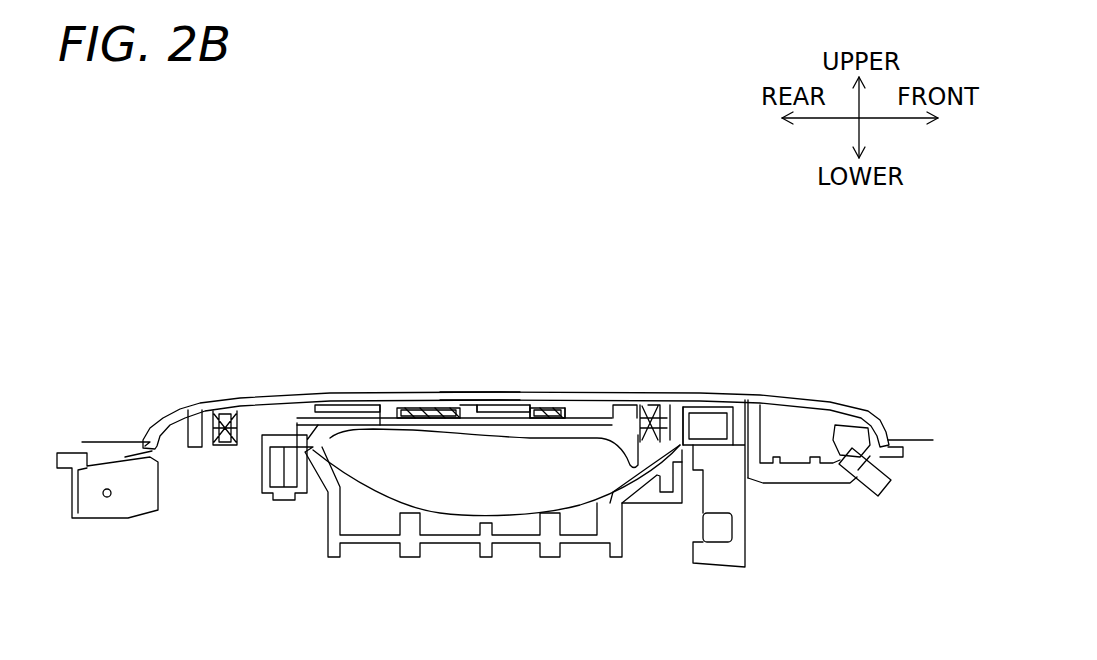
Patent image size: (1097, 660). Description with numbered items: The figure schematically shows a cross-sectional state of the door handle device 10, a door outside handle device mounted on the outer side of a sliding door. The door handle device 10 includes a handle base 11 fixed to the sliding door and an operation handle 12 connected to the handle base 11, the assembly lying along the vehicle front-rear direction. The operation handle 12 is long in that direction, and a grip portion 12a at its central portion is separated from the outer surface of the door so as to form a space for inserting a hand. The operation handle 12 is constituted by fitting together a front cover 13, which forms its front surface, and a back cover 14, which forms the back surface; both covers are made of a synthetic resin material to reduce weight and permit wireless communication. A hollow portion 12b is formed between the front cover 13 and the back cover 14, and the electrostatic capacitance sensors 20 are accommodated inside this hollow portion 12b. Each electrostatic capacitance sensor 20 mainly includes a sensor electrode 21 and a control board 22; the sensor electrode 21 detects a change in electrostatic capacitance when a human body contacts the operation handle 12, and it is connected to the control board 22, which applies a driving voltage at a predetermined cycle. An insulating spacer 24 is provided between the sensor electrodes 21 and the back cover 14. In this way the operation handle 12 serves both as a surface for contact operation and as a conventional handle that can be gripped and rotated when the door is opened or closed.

The door handle device 10 is at (812, 335).
The handle base 11 is at (330, 542).
The operation handle 12 is at (284, 386).
The grip portion 12a is at (478, 400).
The hollow portion 12b is at (640, 394).
The front cover 13 is at (600, 398).
The back cover 14 is at (480, 420).
The electrostatic capacitance sensor 20 is at (368, 370).
The sensor electrode 21 is at (430, 408).
The control board 22 is at (347, 407).
The insulating spacer 24 is at (448, 418).